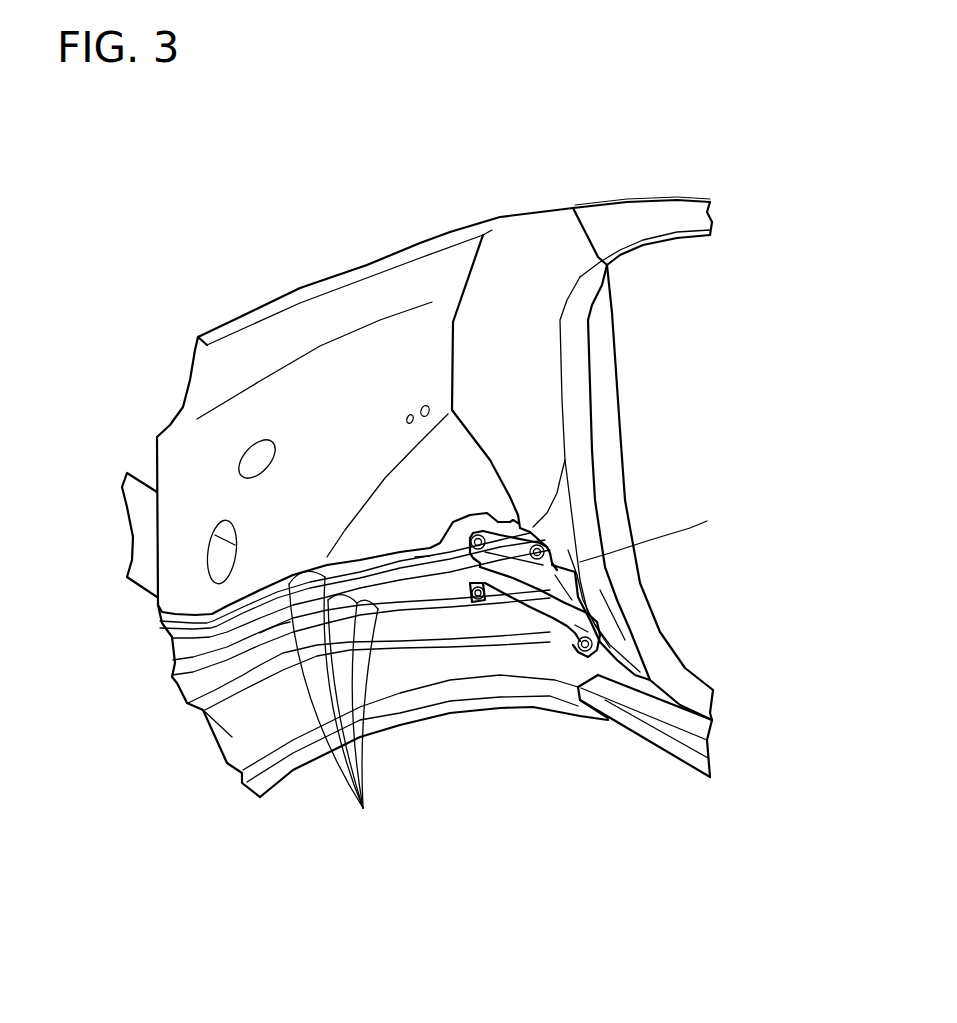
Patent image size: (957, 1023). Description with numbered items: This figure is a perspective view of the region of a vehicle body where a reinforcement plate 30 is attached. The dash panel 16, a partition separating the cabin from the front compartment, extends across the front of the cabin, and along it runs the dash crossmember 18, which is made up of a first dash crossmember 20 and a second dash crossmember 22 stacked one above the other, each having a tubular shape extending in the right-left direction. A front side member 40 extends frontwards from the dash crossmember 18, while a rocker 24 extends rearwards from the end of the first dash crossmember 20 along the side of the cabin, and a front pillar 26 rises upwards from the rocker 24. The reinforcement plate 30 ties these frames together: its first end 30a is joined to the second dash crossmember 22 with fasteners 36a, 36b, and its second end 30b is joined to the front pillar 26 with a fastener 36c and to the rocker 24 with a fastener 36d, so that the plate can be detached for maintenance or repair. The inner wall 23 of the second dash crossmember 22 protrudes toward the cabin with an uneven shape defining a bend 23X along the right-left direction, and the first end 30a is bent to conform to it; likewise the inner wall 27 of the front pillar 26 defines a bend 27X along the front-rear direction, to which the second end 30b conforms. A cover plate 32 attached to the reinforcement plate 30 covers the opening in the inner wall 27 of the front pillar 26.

The dash panel 16 is at (186, 447).
The dash crossmember 18 is at (60, 679).
The first dash crossmember 20 is at (232, 737).
The second dash crossmember 22 is at (195, 650).
The inner wall 23 is at (260, 633).
The bend 23X is at (340, 710).
The rocker 24 is at (667, 743).
The front pillar 26 is at (607, 323).
The inner wall 27 is at (580, 553).
The bend 27X is at (607, 630).
The reinforcement plate 30 is at (512, 520).
The first end 30a is at (423, 557).
The second end 30b is at (582, 628).
The cover plate 32 is at (573, 588).
The fastener 36a is at (470, 542).
The fastener 36b is at (477, 605).
The fastener 36c is at (545, 540).
The fastener 36d is at (592, 656).
The front side member 40 is at (133, 502).